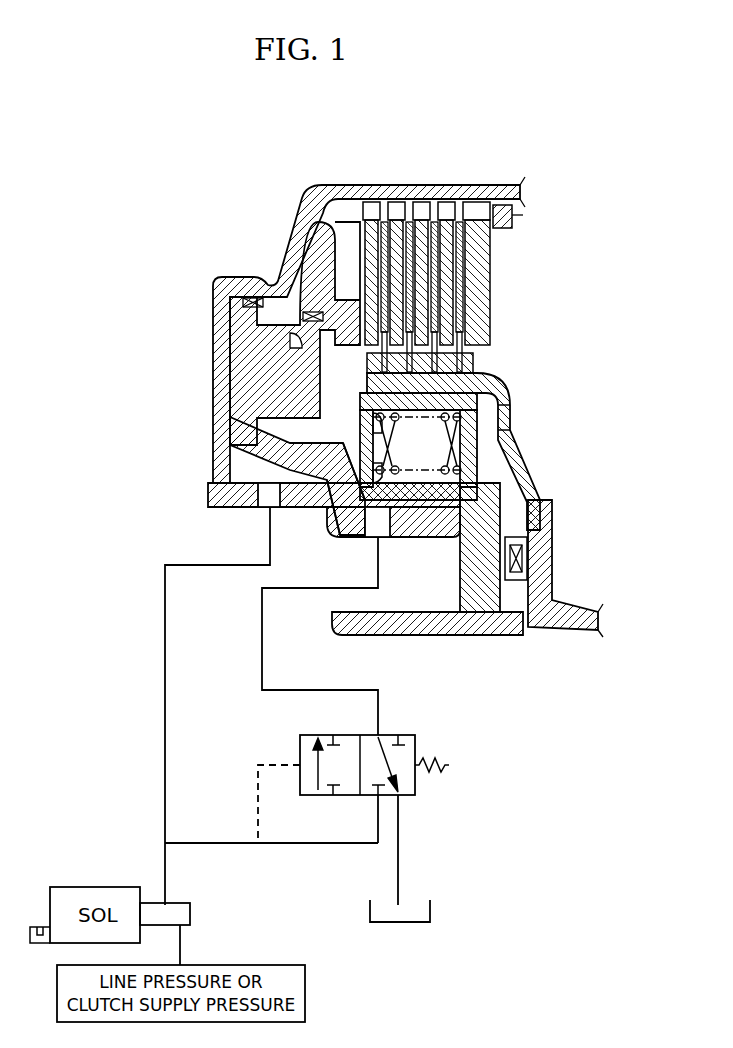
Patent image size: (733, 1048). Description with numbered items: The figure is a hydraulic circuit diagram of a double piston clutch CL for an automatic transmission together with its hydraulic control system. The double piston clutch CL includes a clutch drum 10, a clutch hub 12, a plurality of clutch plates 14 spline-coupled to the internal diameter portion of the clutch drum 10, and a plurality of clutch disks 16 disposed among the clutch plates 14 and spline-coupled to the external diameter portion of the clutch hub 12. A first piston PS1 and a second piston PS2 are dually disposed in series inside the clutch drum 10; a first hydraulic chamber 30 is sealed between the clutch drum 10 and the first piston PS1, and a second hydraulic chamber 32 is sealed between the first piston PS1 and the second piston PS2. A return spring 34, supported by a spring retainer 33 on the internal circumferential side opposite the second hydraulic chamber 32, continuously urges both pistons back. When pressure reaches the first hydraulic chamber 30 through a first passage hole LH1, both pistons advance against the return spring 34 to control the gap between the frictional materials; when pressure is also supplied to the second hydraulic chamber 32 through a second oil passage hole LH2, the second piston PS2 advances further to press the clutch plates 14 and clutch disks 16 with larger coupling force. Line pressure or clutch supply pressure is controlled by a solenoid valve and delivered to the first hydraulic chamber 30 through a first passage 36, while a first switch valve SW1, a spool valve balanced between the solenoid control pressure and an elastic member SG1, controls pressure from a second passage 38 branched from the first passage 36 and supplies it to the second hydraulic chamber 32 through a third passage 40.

The clutch drum 10 is at (303, 204).
The clutch hub 12 is at (515, 448).
The clutch plates 14 is at (448, 235).
The clutch disks 16 is at (400, 230).
The double piston clutch CL is at (472, 256).
The first piston PS1 is at (240, 365).
The second piston PS2 is at (270, 390).
The first hydraulic chamber 30 is at (243, 457).
The second hydraulic chamber 32 is at (345, 480).
The spring retainer 33 is at (460, 472).
The return spring 34 is at (450, 425).
The first passage hole LH1 is at (263, 510).
The second oil passage hole LH2 is at (385, 540).
The first passage 36 is at (165, 663).
The third passage 40 is at (262, 663).
The second passage 38 is at (262, 846).
The first switch valve SW1 is at (425, 733).
The elastic member SG1 is at (449, 765).